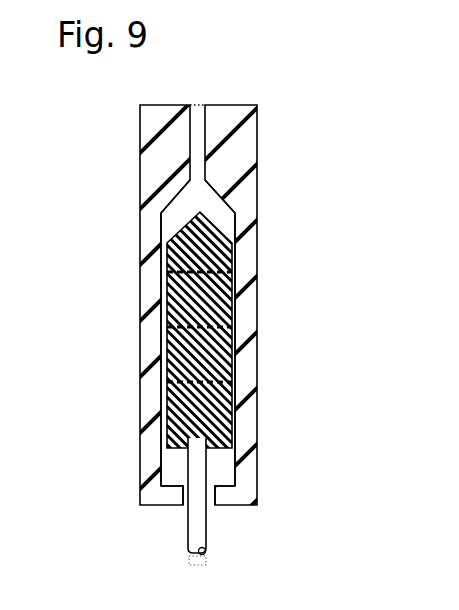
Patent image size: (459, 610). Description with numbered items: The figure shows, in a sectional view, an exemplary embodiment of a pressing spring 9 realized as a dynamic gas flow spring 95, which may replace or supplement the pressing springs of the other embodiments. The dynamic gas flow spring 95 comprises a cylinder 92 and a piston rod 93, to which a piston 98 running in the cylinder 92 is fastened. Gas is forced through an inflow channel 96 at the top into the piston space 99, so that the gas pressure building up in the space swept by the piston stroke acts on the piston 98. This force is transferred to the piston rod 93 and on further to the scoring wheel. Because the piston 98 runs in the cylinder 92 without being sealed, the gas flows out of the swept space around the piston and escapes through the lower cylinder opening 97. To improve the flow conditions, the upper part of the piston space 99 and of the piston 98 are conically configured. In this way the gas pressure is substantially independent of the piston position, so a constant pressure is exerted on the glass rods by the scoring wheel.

The pressing spring 9 is at (100, 264).
The dynamic gas flow spring 95 is at (229, 305).
The cylinder 92 is at (257, 208).
The inflow channel 96 is at (200, 145).
The piston space 99 is at (190, 208).
The piston 98 is at (207, 282).
The piston rod 93 is at (210, 523).
The lower cylinder opening 97 is at (183, 495).